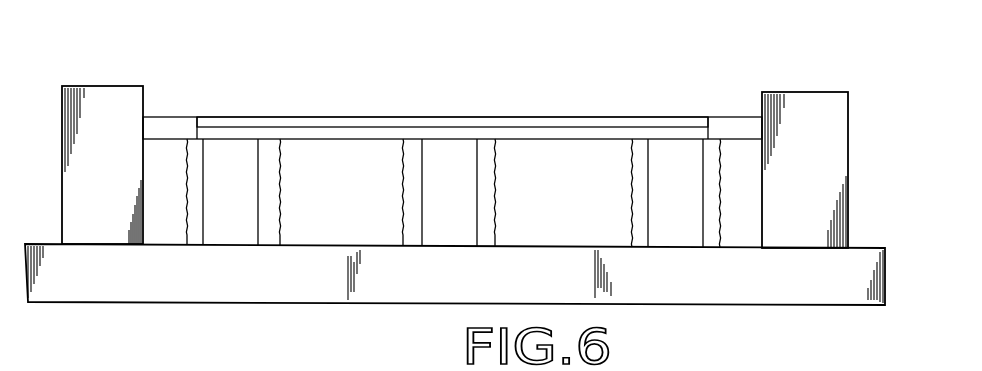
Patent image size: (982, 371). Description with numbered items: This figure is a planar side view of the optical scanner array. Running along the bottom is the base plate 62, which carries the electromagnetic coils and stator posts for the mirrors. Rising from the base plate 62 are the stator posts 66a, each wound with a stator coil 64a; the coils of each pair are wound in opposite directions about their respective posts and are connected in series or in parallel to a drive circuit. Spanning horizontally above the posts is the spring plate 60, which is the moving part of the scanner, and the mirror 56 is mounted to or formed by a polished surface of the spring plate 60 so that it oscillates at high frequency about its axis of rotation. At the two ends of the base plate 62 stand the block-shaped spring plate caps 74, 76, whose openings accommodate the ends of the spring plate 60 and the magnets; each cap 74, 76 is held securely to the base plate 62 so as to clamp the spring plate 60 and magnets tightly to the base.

The mirror 56 is at (282, 118).
The spring plate 60 is at (170, 114).
The base plate 62 is at (867, 307).
The stator coil 64a is at (281, 188).
The stator post 66a is at (243, 228).
The spring plate cap 74 is at (108, 85).
The spring plate cap 76 is at (813, 92).